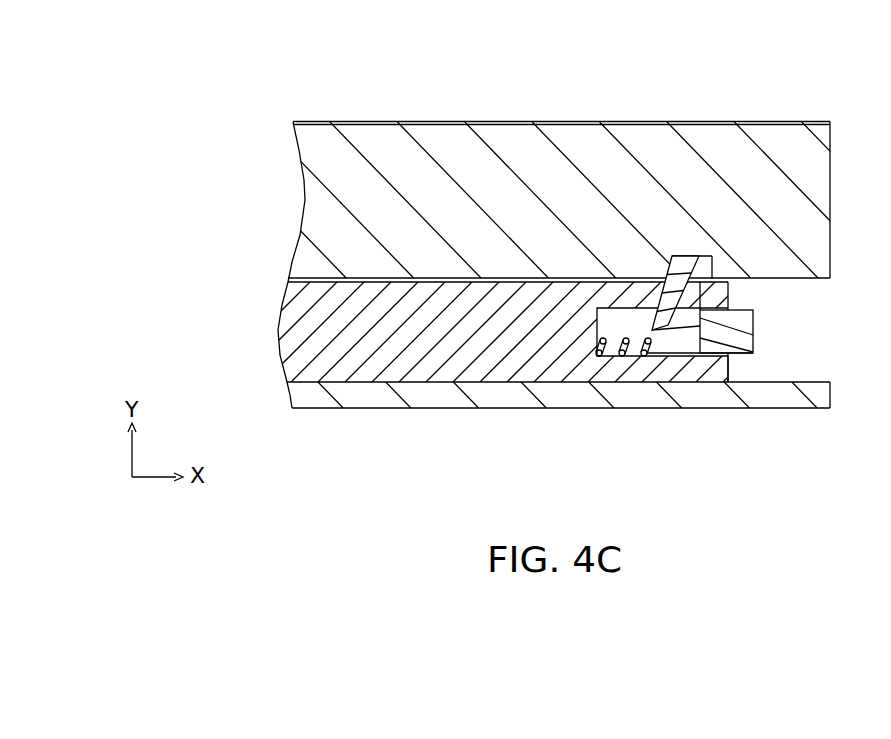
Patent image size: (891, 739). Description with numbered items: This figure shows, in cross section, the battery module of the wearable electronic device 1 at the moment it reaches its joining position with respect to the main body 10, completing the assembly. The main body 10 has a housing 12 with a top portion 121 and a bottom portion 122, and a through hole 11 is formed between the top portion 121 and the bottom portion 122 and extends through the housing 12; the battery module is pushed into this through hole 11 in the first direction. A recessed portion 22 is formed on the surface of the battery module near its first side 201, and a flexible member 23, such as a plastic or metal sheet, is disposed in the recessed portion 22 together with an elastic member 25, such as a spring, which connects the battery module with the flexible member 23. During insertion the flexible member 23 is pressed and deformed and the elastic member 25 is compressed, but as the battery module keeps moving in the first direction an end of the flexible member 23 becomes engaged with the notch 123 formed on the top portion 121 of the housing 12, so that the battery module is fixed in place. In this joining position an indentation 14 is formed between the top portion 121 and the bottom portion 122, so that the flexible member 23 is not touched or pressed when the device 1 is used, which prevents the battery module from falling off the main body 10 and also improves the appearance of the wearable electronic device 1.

The wearable electronic device 1 is at (185, 78).
The main body 10 is at (836, 115).
The through hole 11 is at (452, 281).
The housing 12 is at (207, 188).
The top portion 121 is at (355, 200).
The bottom portion 122 is at (320, 395).
The notch 123 is at (707, 262).
The indentation 14 is at (816, 328).
The recessed portion 22 is at (622, 322).
The flexible member 23 is at (688, 262).
The elastic member 25 is at (622, 358).
The first side 201 is at (728, 366).